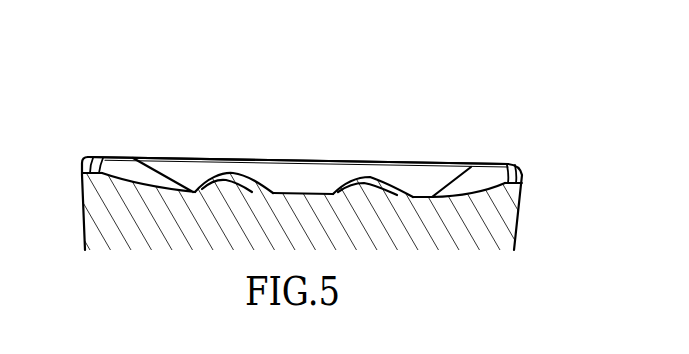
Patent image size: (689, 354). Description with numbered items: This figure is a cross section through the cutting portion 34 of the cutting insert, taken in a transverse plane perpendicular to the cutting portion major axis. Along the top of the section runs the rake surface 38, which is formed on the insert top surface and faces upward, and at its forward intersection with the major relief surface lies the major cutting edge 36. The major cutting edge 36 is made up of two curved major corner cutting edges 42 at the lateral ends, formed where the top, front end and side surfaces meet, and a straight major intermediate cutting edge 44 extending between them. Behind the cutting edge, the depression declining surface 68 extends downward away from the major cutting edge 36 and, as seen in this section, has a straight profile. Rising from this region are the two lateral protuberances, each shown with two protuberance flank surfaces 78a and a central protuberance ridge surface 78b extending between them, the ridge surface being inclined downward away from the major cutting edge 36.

The cutting portion 34 is at (562, 114).
The major cutting edge 36 is at (397, 149).
The rake surface 38 is at (171, 168).
The major corner cutting edge 42 is at (74, 158).
The major intermediate cutting edge 44 is at (316, 162).
The depression declining surface 68 is at (284, 192).
The protuberance flank surface 78a is at (212, 182).
The central protuberance ridge surface 78b is at (219, 177).